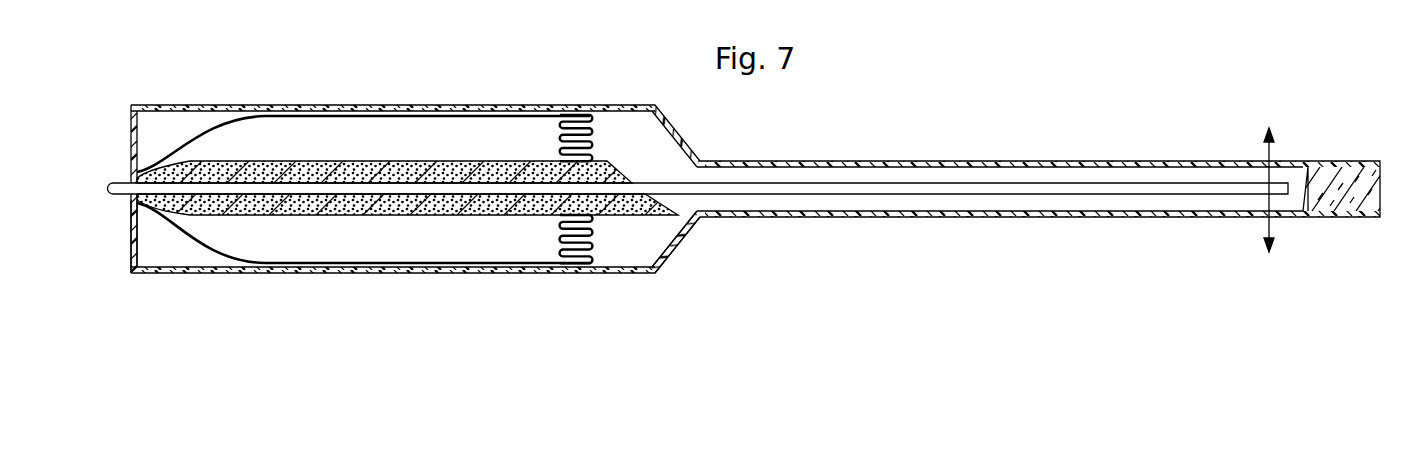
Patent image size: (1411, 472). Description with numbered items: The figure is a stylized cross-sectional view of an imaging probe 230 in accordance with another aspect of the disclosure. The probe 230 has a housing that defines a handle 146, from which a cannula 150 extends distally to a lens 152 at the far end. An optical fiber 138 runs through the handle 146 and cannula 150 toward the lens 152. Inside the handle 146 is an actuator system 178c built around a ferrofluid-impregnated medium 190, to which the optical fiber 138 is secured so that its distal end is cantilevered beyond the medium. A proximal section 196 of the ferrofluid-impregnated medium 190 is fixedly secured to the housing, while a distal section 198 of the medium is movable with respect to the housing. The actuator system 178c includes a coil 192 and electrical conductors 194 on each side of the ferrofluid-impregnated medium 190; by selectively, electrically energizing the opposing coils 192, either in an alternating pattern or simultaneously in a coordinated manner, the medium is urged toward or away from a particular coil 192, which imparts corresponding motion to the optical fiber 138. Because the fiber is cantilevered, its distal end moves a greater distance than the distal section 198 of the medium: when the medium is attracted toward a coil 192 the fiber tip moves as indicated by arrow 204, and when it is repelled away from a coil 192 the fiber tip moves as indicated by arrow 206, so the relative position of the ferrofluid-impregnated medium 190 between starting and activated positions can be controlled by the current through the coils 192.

The handle 146 is at (365, 106).
The cannula 150 is at (1055, 218).
The lens 152 is at (1345, 167).
The optical fiber 138 is at (1077, 185).
The actuator system 178c is at (407, 267).
The ferrofluid-impregnated medium 190 is at (465, 215).
The coil 192 is at (557, 137).
The electrical conductors 194 is at (198, 125).
The proximal section 196 is at (144, 222).
The distal section 198 is at (657, 224).
The imaging probe 230 is at (916, 119).
The arrow 204 is at (1266, 152).
The arrow 206 is at (1266, 228).